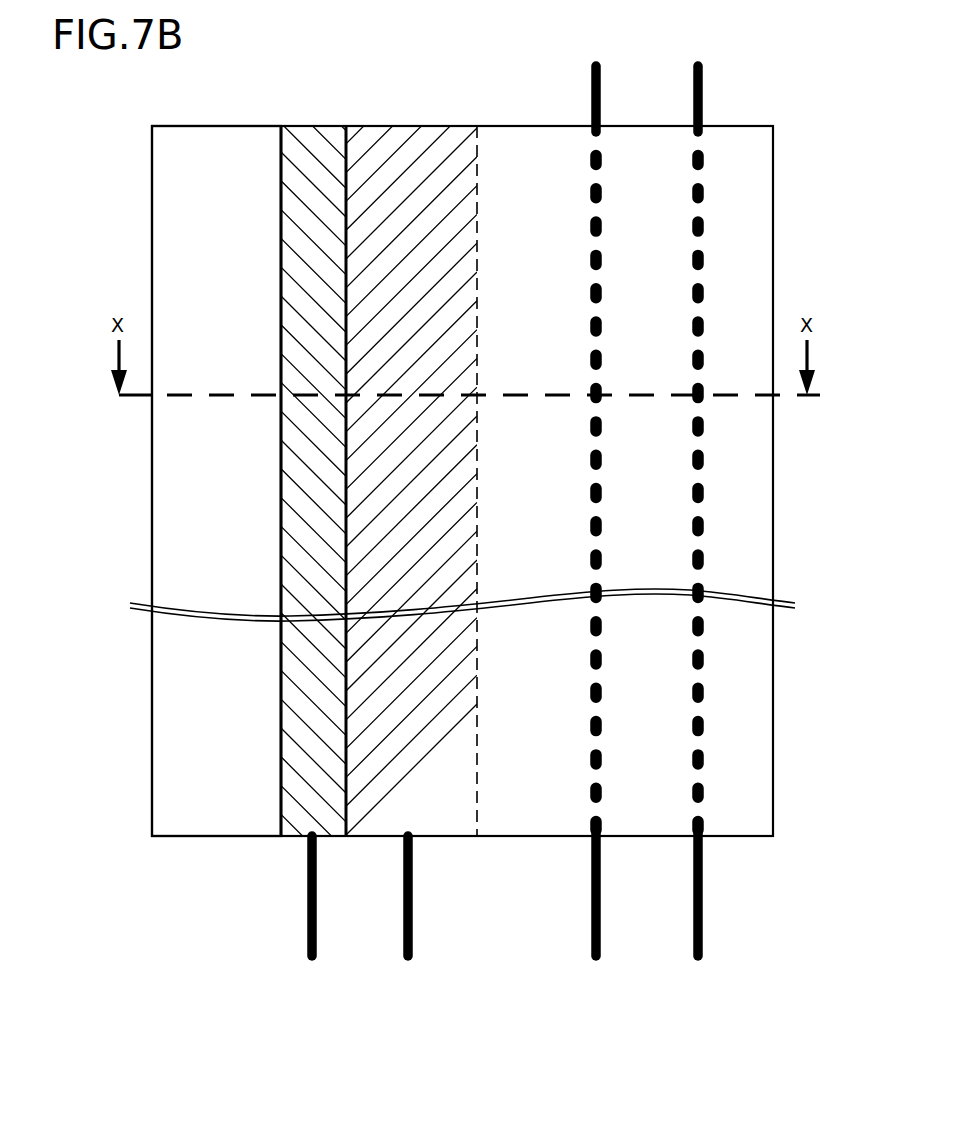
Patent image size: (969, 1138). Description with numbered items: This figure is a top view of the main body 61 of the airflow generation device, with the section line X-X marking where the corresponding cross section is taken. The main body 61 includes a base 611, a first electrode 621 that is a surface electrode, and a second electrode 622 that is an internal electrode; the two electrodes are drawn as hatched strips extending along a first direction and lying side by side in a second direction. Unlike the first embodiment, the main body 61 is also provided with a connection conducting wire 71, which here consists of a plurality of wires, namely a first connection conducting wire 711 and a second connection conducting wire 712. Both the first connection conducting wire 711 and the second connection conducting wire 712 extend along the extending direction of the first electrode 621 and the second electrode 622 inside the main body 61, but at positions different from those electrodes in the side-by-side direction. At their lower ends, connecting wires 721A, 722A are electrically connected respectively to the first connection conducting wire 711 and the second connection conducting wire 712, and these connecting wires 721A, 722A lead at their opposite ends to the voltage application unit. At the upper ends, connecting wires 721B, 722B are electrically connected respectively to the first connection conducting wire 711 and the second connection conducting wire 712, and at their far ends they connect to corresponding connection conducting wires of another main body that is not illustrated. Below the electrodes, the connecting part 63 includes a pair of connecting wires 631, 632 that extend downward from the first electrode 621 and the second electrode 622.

The main body 61 is at (505, 119).
The base 611 is at (242, 138).
The first electrode 621 is at (308, 131).
The second electrode 622 is at (416, 131).
The connection conducting wire 71 is at (733, 490).
The first connection conducting wire 711 is at (600, 493).
The second connection conducting wire 712 is at (703, 527).
The connecting wire 721B is at (600, 73).
The connecting wire 722B is at (702, 101).
The connecting wire 721A is at (600, 883).
The connecting wire 722A is at (702, 912).
The connecting part 63 is at (303, 896).
The connecting wire 631 is at (308, 877).
The connecting wire 632 is at (407, 904).